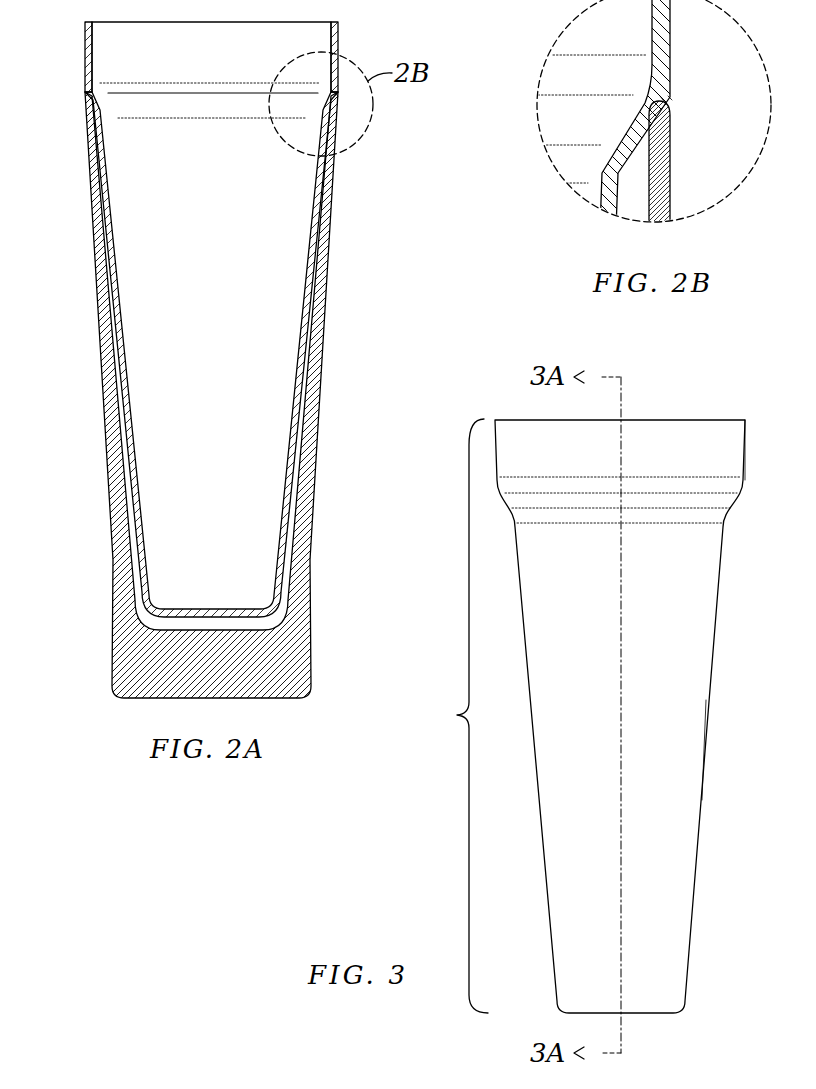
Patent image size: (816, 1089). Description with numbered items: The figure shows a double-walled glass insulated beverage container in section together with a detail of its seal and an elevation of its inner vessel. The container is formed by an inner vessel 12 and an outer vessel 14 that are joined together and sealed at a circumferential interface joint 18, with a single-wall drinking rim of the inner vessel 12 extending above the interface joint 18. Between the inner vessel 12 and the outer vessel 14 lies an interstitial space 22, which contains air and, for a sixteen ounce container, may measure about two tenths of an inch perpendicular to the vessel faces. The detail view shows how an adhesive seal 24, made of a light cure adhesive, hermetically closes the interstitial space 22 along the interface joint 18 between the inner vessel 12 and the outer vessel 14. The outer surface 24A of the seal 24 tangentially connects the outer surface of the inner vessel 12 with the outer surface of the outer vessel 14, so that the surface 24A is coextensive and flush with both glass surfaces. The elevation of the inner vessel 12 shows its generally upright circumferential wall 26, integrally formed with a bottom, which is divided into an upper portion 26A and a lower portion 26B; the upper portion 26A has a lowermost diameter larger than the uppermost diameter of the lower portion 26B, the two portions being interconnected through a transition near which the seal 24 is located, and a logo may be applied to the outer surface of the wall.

In FIG. 2A, the inner vessel 12 is at (133, 468).
In FIG. 2B, the inner vessel 12 is at (669, 34).
In FIG. 3, the inner vessel 12 is at (695, 399).
In FIG. 2A, the outer vessel 14 is at (308, 553).
In FIG. 2B, the outer vessel 14 is at (668, 162).
In FIG. 2A, the interface joint 18 is at (85, 92).
In FIG. 2A, the interstitial space 22 is at (296, 406).
In FIG. 2A, the adhesive seal 24 is at (337, 94).
In FIG. 2B, the adhesive seal 24 is at (672, 98).
In FIG. 2B, the outer surface of seal 24A is at (665, 97).
In FIG. 3, the circumferential wall 26 is at (455, 715).
In FIG. 3, the upper portion 26A is at (745, 448).
In FIG. 3, the lower portion 26B is at (706, 755).